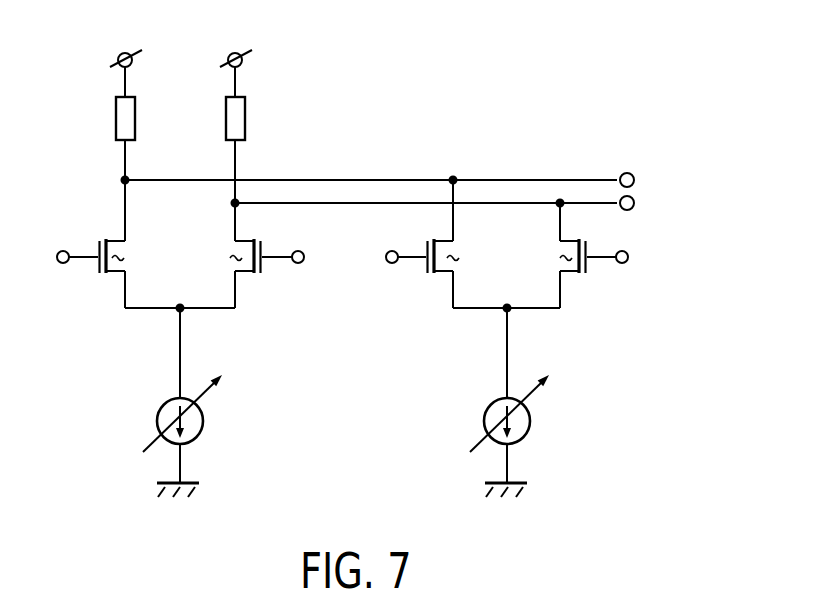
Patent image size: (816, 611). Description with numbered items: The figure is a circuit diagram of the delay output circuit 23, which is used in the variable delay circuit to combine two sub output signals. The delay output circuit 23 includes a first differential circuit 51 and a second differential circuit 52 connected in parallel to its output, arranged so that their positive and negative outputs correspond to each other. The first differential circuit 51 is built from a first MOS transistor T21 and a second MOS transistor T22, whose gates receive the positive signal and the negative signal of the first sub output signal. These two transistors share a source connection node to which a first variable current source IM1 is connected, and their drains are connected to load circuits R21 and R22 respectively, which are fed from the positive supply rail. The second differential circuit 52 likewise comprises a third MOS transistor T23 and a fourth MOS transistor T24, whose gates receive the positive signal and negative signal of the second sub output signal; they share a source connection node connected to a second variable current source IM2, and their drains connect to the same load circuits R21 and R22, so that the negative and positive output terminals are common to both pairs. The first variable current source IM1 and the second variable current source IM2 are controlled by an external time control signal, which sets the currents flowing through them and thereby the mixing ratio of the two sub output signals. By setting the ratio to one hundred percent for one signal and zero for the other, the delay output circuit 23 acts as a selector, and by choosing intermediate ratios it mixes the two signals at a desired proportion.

The delay output circuit 23 is at (388, 112).
The first differential circuit 51 is at (92, 186).
The second differential circuit 52 is at (532, 168).
The load circuit R21 is at (105, 118).
The load circuit R22 is at (257, 118).
The first MOS transistor T21 is at (131, 256).
The second MOS transistor T22 is at (224, 256).
The third MOS transistor T23 is at (461, 256).
The fourth MOS transistor T24 is at (552, 256).
The first variable current source IM1 is at (156, 421).
The second variable current source IM2 is at (483, 421).